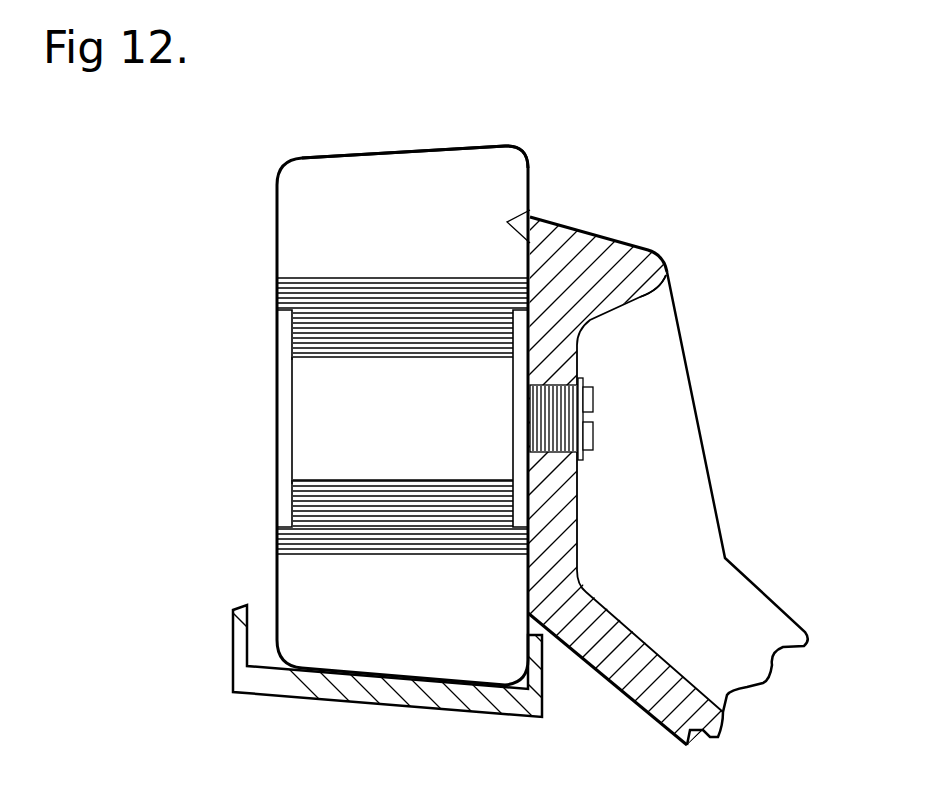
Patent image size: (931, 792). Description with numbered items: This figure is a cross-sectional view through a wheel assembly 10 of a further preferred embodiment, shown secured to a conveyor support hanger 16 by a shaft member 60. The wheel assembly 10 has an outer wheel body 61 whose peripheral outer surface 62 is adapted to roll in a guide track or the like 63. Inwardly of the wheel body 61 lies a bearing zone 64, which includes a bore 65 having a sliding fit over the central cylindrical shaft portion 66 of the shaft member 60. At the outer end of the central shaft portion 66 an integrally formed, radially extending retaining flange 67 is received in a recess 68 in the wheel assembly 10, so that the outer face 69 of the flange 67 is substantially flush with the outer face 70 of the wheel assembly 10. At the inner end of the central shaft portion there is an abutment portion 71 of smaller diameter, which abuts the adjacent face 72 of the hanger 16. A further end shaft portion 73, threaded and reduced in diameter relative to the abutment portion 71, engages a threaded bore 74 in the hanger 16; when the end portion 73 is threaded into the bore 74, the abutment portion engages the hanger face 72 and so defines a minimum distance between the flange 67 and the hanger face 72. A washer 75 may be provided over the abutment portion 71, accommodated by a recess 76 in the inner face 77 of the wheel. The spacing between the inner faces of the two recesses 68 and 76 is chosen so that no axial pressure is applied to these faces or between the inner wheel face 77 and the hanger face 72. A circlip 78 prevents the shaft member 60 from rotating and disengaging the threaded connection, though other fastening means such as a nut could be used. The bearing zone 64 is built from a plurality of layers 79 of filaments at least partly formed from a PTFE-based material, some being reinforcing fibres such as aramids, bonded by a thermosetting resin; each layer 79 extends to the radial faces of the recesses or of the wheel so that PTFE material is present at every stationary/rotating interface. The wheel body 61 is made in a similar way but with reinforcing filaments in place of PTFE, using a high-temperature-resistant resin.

The wheel assembly 10 is at (440, 128).
The conveyor support hanger 16 is at (688, 490).
The shaft member 60 is at (315, 443).
The outer wheel body 61 is at (330, 192).
The peripheral outer surface 62 is at (376, 150).
The guide track 63 is at (282, 697).
The bearing zone 64 is at (457, 295).
The bore 65 is at (337, 357).
The central cylindrical shaft portion 66 is at (307, 470).
The retaining flange 67 is at (277, 492).
The recess 68 is at (276, 336).
The outer face of the flange 69 is at (276, 396).
The outer face of the wheel assembly 70 is at (276, 580).
The abutment portion 71 is at (522, 375).
The hanger face 72 is at (531, 210).
The end shaft portion 73 is at (594, 404).
The threaded bore 74 is at (594, 440).
The washer 75 is at (520, 503).
The recess 76 is at (531, 318).
The inner face of the wheel 77 is at (530, 260).
The circlip 78 is at (583, 379).
The layers 79 is at (340, 333).